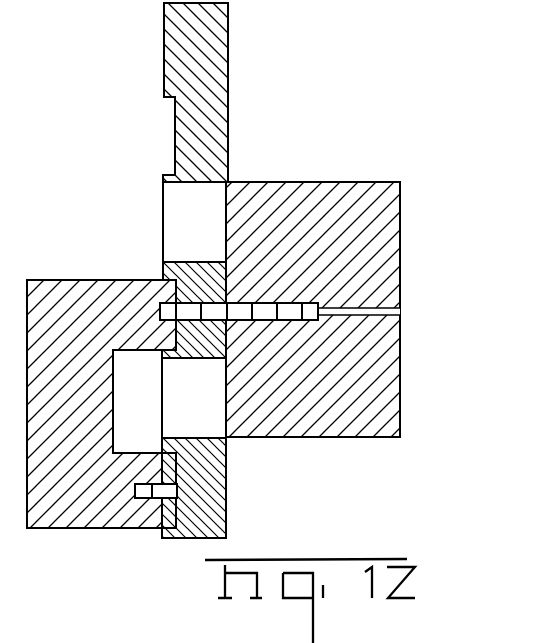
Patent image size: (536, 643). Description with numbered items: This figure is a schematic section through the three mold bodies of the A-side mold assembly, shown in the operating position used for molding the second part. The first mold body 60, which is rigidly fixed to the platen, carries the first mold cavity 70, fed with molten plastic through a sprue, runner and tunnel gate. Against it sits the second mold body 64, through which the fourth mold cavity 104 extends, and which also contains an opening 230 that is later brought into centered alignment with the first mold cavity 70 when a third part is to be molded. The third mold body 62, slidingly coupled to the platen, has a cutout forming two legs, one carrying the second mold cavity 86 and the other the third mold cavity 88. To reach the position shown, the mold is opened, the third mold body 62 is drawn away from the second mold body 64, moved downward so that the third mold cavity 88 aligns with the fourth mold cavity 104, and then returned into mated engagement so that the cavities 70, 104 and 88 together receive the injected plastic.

The first mold body 60 is at (330, 182).
The third mold body 62 is at (62, 280).
The second mold body 64 is at (220, 50).
The first mold cavity 70 is at (266, 310).
The second mold cavity 86 is at (168, 492).
The third mold cavity 88 is at (160, 308).
The fourth mold cavity 104 is at (217, 308).
The opening 230 is at (195, 402).